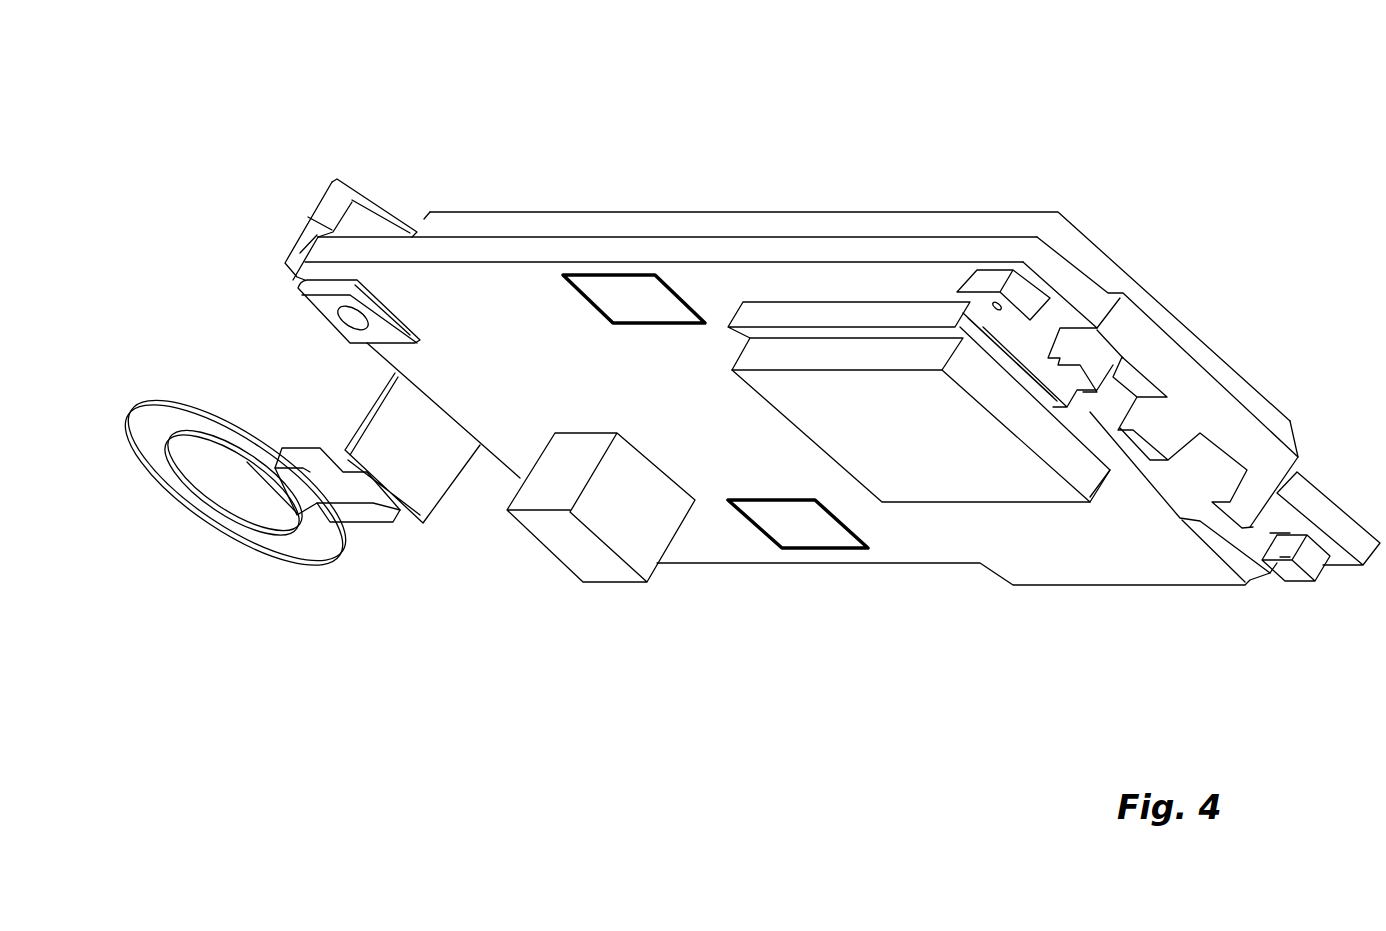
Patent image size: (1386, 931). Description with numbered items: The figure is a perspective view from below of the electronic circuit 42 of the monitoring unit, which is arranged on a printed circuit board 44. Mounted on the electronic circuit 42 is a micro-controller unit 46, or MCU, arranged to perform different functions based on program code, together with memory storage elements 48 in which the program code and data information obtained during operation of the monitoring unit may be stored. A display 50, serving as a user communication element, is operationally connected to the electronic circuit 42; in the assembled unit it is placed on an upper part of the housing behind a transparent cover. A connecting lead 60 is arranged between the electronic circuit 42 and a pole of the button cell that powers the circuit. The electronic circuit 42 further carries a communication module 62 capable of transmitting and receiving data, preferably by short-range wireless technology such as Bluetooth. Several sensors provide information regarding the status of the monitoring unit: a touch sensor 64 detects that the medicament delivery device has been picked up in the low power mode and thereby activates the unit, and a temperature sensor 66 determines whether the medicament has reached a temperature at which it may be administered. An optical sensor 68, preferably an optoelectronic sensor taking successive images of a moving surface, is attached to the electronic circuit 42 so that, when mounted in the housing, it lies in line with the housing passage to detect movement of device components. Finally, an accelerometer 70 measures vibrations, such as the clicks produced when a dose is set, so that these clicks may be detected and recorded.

The electronic circuit 42 is at (496, 146).
The printed circuit board 44 is at (657, 248).
The micro-controller unit 46 is at (1040, 527).
The memory storage elements 48 is at (913, 467).
The display 50 is at (1025, 222).
The connecting lead 60 is at (320, 552).
The communication module 62 is at (640, 561).
The touch sensor 64 is at (618, 293).
The temperature sensor 66 is at (822, 537).
The optical sensor 68 is at (1172, 420).
The accelerometer 70 is at (985, 270).